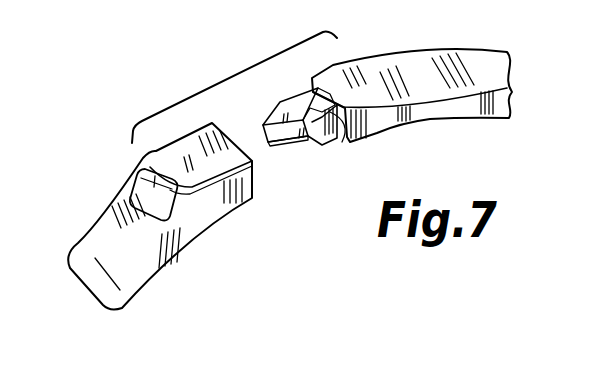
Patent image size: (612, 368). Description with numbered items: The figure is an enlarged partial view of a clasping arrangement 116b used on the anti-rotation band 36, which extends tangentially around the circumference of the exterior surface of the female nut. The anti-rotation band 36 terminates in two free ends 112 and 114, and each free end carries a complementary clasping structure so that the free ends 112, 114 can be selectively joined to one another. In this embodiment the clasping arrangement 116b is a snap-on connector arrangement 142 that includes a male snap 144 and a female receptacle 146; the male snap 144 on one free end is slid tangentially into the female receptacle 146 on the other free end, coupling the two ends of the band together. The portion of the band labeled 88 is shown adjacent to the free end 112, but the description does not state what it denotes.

The anti-rotation band 36 is at (442, 68).
The band segment end 88 is at (488, 72).
The free end 112 is at (318, 88).
The free end 114 is at (257, 180).
The clasping arrangement 116b is at (175, 90).
The snap-on connector arrangement 142 is at (229, 78).
The male snap 144 is at (300, 144).
The female receptacle 146 is at (137, 177).